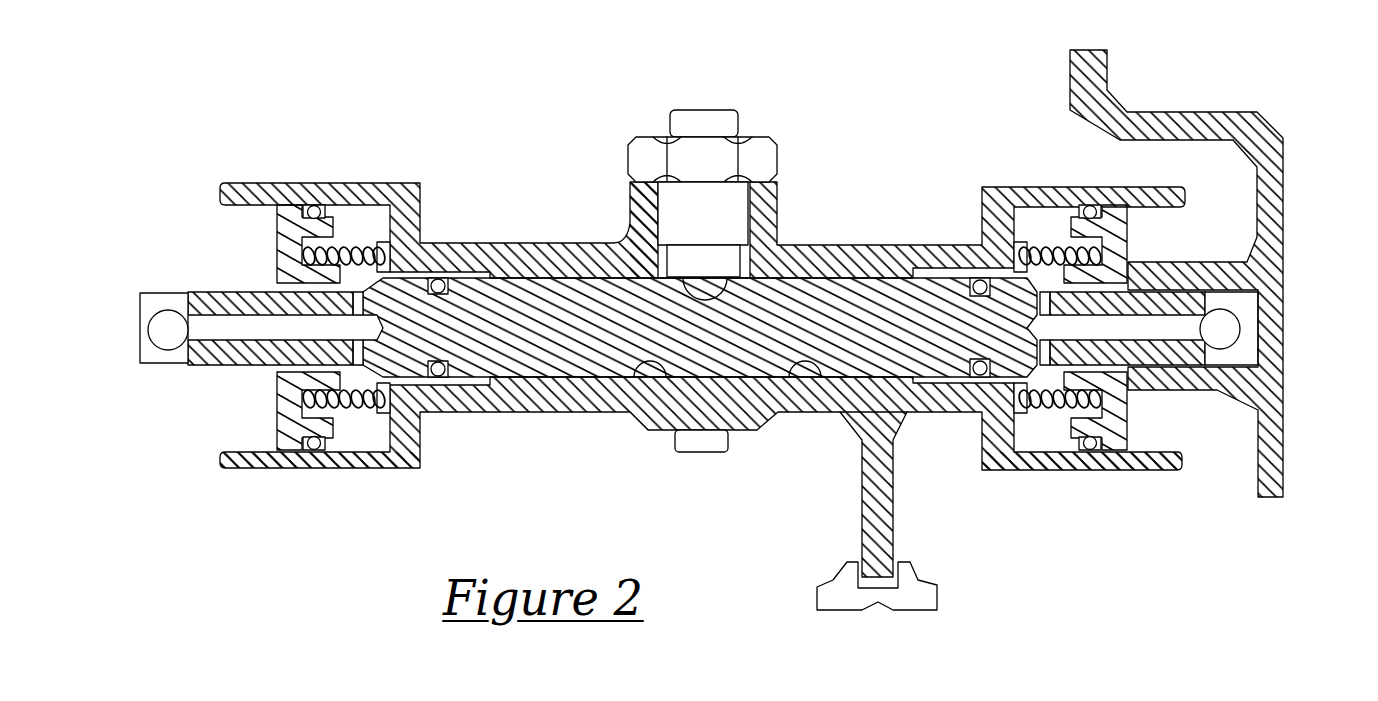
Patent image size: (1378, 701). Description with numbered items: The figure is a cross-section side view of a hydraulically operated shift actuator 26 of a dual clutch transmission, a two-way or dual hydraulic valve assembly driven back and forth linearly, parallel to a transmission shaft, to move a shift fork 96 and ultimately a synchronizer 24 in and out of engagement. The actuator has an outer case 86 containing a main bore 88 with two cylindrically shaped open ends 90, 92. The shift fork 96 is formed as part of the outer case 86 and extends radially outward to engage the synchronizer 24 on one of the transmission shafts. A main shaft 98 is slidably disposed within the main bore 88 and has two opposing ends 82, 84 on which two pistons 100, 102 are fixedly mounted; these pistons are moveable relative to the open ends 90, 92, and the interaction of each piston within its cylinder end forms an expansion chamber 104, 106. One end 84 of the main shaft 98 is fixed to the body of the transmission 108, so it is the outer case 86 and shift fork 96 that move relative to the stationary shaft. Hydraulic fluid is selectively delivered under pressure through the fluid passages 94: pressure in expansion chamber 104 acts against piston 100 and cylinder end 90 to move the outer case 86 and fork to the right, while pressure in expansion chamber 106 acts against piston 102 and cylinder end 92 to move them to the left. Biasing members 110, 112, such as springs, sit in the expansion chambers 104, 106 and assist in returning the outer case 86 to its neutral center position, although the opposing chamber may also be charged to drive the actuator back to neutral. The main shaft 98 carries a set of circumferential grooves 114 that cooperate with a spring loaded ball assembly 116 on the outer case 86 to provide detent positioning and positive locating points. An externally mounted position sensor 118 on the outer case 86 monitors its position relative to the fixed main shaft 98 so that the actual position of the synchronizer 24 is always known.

The synchronizer 24 is at (927, 588).
The shift actuator 26 is at (502, 152).
The end of main shaft 82 is at (262, 362).
The end of main shaft 84 is at (1262, 407).
The outer case 86 is at (604, 413).
The main bore 88 is at (803, 363).
The cylindrically shaped open end 90 is at (262, 446).
The cylindrically shaped open end 92 is at (1165, 447).
The fluid passage 94 is at (170, 330).
The shift fork 96 is at (892, 512).
The main shaft 98 is at (845, 287).
The piston 100 is at (285, 243).
The piston 102 is at (1122, 232).
The expansion chamber 104 is at (352, 437).
The expansion chamber 106 is at (1045, 438).
The body of the transmission 108 is at (1083, 97).
The biasing member 110 is at (340, 428).
The biasing member 112 is at (1115, 415).
The circumferential grooves 114 is at (640, 225).
The spring loaded ball assembly 116 is at (733, 210).
The position sensor 118 is at (690, 447).